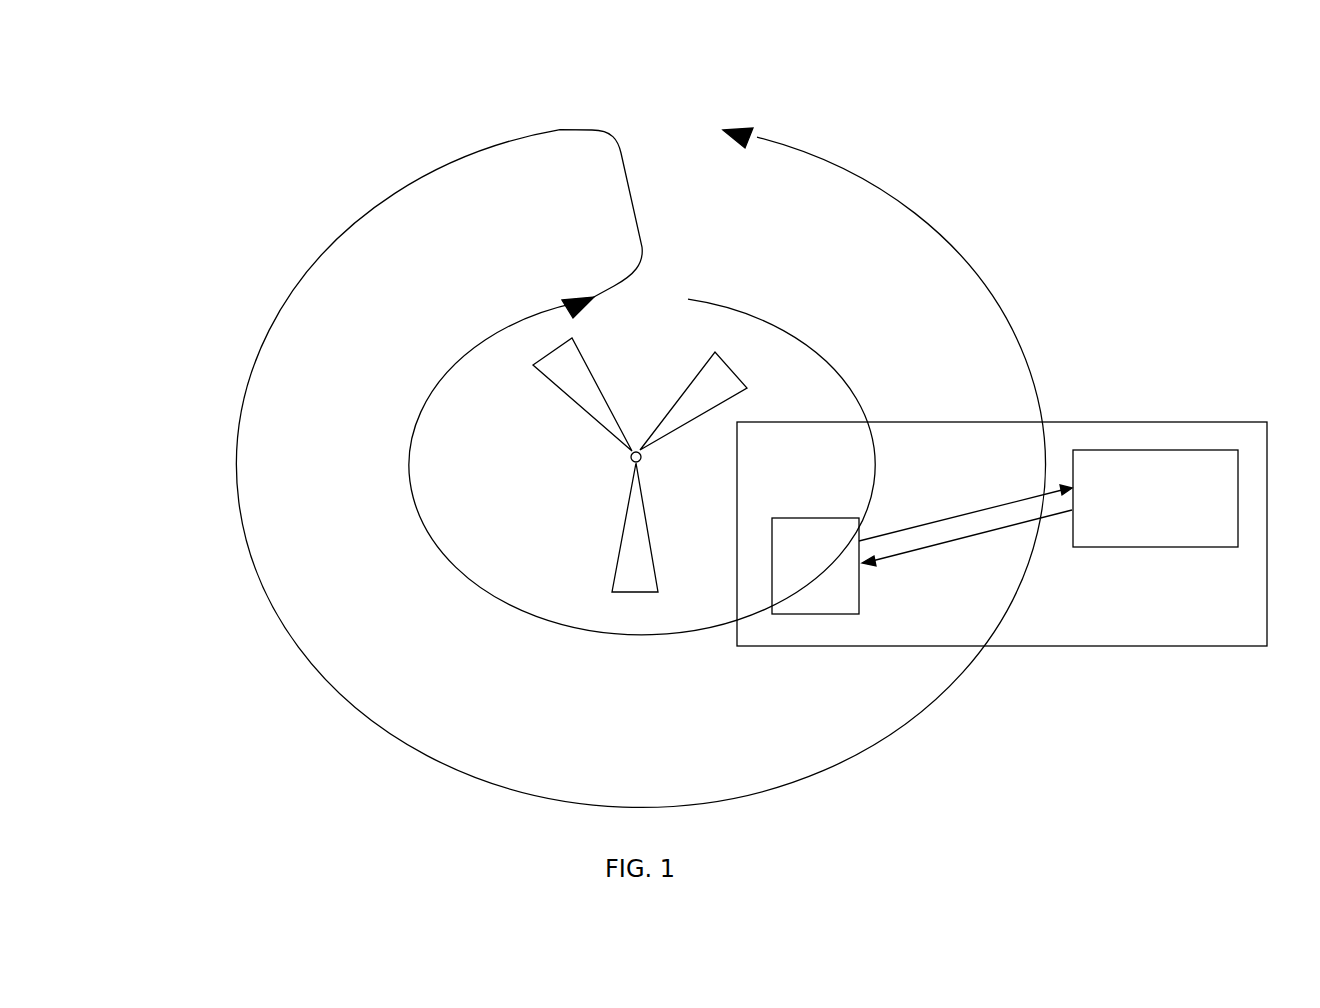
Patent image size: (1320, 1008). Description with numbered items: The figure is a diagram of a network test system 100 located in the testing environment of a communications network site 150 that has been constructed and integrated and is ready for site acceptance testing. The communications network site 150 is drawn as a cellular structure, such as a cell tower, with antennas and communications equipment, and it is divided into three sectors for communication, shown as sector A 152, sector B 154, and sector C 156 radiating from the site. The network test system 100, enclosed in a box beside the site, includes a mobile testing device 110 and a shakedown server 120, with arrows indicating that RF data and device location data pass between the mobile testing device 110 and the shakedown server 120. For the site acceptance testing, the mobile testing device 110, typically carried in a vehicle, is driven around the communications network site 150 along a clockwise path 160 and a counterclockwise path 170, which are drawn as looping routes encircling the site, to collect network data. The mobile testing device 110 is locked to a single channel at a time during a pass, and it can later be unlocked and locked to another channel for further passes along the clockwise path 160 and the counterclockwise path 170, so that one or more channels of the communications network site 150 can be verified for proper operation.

The network test system 100 is at (204, 132).
The mobile testing device 110 is at (815, 566).
The shakedown server 120 is at (1155, 498).
The communications network site 150 is at (612, 465).
The sector A 152 is at (690, 383).
The sector B 154 is at (617, 563).
The sector C 156 is at (560, 392).
The clockwise path 160 is at (409, 488).
The counterclockwise path 170 is at (243, 398).